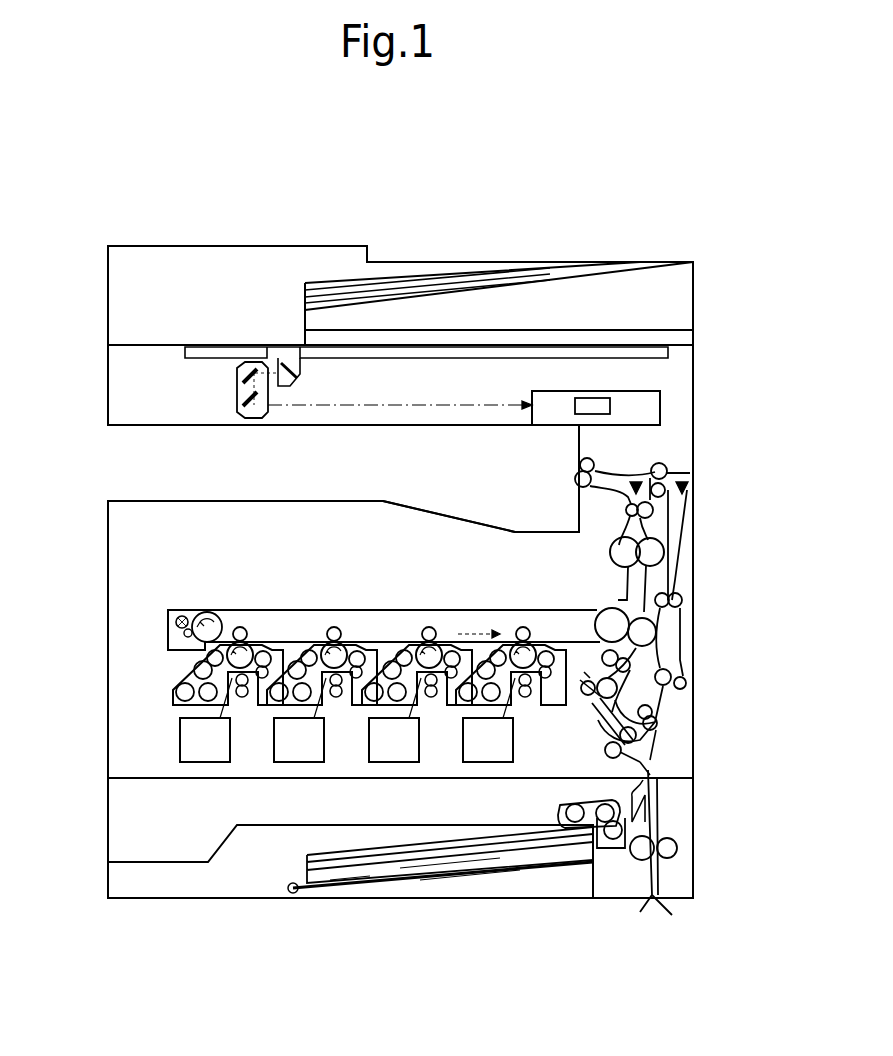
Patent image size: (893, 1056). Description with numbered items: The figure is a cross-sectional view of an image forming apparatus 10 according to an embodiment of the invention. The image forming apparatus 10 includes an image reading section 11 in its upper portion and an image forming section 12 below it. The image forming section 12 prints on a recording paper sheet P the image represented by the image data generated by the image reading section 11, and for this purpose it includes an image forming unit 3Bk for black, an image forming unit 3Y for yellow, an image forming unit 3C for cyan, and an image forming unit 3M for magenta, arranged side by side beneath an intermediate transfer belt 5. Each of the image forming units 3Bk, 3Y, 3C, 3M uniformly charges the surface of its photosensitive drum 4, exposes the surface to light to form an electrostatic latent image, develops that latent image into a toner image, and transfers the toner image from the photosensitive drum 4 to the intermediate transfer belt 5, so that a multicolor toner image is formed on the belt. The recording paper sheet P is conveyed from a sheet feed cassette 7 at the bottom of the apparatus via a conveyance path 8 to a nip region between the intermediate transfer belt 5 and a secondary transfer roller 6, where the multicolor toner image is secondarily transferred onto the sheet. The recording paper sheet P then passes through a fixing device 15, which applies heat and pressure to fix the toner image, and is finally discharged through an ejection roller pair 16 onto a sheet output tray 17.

The image forming apparatus 10 is at (430, 185).
The image reading section 11 is at (694, 363).
The image forming section 12 is at (130, 586).
The sheet output tray 17 is at (135, 500).
The ejection roller pair 16 is at (597, 463).
The fixing device 15 is at (660, 540).
The intermediate transfer belt 5 is at (317, 610).
The photosensitive drum 4 is at (238, 641).
The image forming unit for black 3Bk is at (272, 614).
The image forming unit for yellow 3Y is at (362, 616).
The image forming unit for cyan 3C is at (448, 614).
The image forming unit for magenta 3M is at (543, 612).
The secondary transfer roller 6 is at (672, 626).
The conveyance path 8 is at (648, 768).
The sheet feed cassette 7 is at (122, 885).
The recording paper sheet P is at (313, 848).